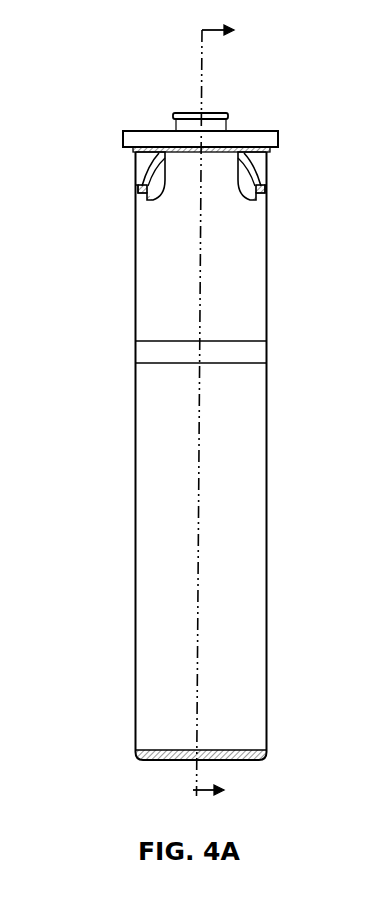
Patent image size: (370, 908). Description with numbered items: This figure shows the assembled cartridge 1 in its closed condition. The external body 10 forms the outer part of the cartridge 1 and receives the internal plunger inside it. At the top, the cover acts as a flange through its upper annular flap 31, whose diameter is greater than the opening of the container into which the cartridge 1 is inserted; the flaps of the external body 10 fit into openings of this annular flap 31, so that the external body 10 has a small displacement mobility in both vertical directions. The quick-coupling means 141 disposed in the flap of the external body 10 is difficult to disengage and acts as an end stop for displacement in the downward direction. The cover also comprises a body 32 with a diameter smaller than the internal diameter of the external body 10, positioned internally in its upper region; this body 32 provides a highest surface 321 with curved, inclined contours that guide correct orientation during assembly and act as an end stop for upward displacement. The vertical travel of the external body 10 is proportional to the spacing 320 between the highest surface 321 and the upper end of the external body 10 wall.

The cartridge 1 is at (205, 411).
The external body 10 is at (265, 302).
The annular flap 31 is at (280, 133).
The quick-coupling means 141 is at (212, 108).
The body 32 is at (201, 177).
The highest surface 321 is at (135, 168).
The spacing 320 is at (135, 195).